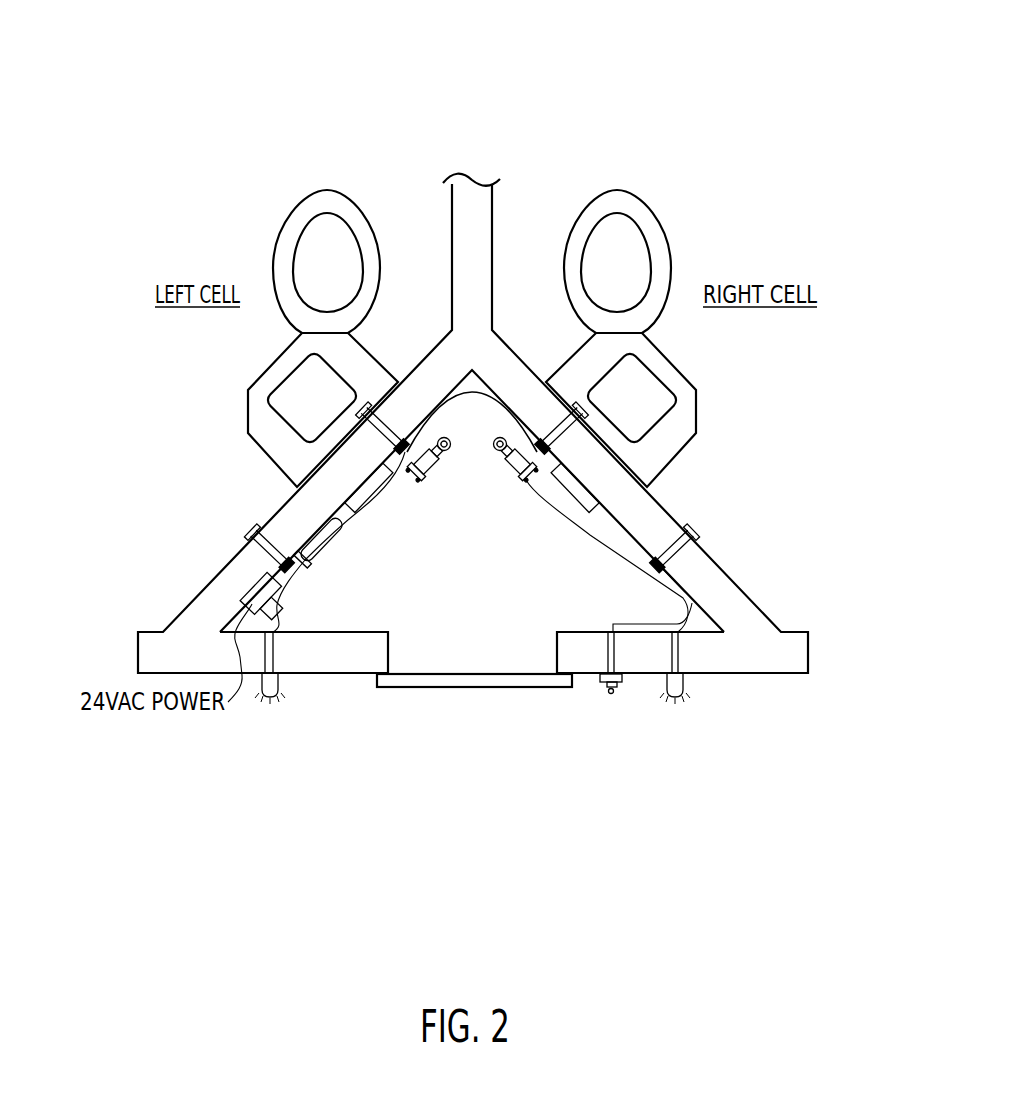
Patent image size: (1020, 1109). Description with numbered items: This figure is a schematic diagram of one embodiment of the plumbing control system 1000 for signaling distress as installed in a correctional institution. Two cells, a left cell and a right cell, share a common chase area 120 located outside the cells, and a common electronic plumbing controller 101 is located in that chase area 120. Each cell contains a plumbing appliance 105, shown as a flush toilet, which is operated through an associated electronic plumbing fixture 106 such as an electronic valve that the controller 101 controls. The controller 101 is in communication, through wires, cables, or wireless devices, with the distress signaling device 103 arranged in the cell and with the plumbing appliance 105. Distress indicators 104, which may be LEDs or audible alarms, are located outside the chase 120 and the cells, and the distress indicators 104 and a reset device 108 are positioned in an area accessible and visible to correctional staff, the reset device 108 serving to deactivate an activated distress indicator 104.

The plumbing appliance 105 is at (587, 212).
The plumbing fixture 106 is at (422, 478).
The electronic plumbing controller 101 is at (308, 528).
The reset device 108 is at (595, 752).
The distress signaling device 103 is at (693, 528).
The distress indicator 104 is at (703, 758).
The chase area 120 is at (487, 583).
The plumbing control system 1000 is at (352, 835).